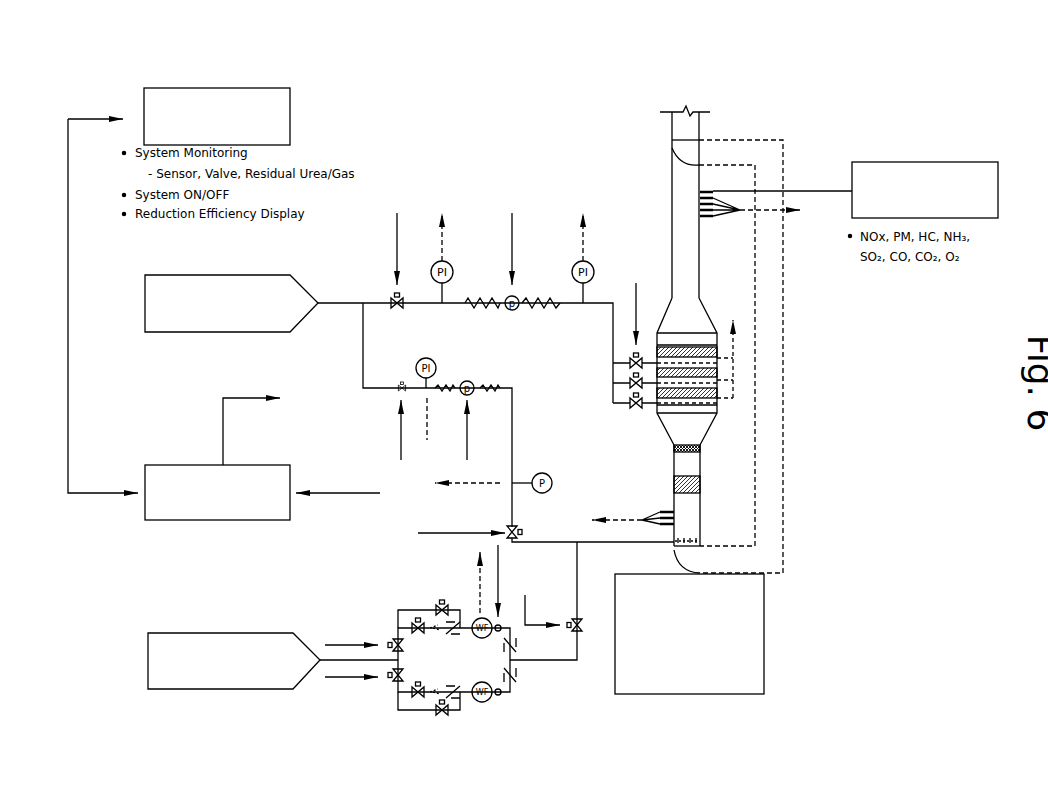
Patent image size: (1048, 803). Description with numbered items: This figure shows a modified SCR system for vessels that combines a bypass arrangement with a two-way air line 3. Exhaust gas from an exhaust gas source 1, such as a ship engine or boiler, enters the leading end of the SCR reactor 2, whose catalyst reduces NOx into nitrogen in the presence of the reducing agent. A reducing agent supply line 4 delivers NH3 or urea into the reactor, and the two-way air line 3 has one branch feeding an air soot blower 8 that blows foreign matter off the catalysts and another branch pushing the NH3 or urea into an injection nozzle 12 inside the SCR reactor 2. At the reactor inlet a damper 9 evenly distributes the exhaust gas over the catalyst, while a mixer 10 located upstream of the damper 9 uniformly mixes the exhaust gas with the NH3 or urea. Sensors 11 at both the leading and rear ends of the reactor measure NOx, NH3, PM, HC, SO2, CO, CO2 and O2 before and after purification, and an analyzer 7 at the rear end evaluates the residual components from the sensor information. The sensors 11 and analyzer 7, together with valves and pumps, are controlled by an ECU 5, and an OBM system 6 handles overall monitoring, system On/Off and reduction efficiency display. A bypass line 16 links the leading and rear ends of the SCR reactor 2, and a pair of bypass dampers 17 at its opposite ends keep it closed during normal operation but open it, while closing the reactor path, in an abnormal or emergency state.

The exhaust gas source 1 is at (694, 694).
The SCR reactor 2 is at (706, 314).
The air line 3 is at (300, 285).
The reducing agent supply line 4 is at (255, 633).
The ECU 5 is at (278, 465).
The OBM system 6 is at (265, 88).
The analyzer 7 is at (923, 162).
The air soot blower 8 is at (722, 400).
The damper 9 is at (674, 449).
The mixer 10 is at (674, 483).
The sensors 11 is at (722, 222).
The injection nozzle 12 is at (692, 538).
The bypass line 16 is at (783, 324).
The bypass dampers 17 is at (688, 140).